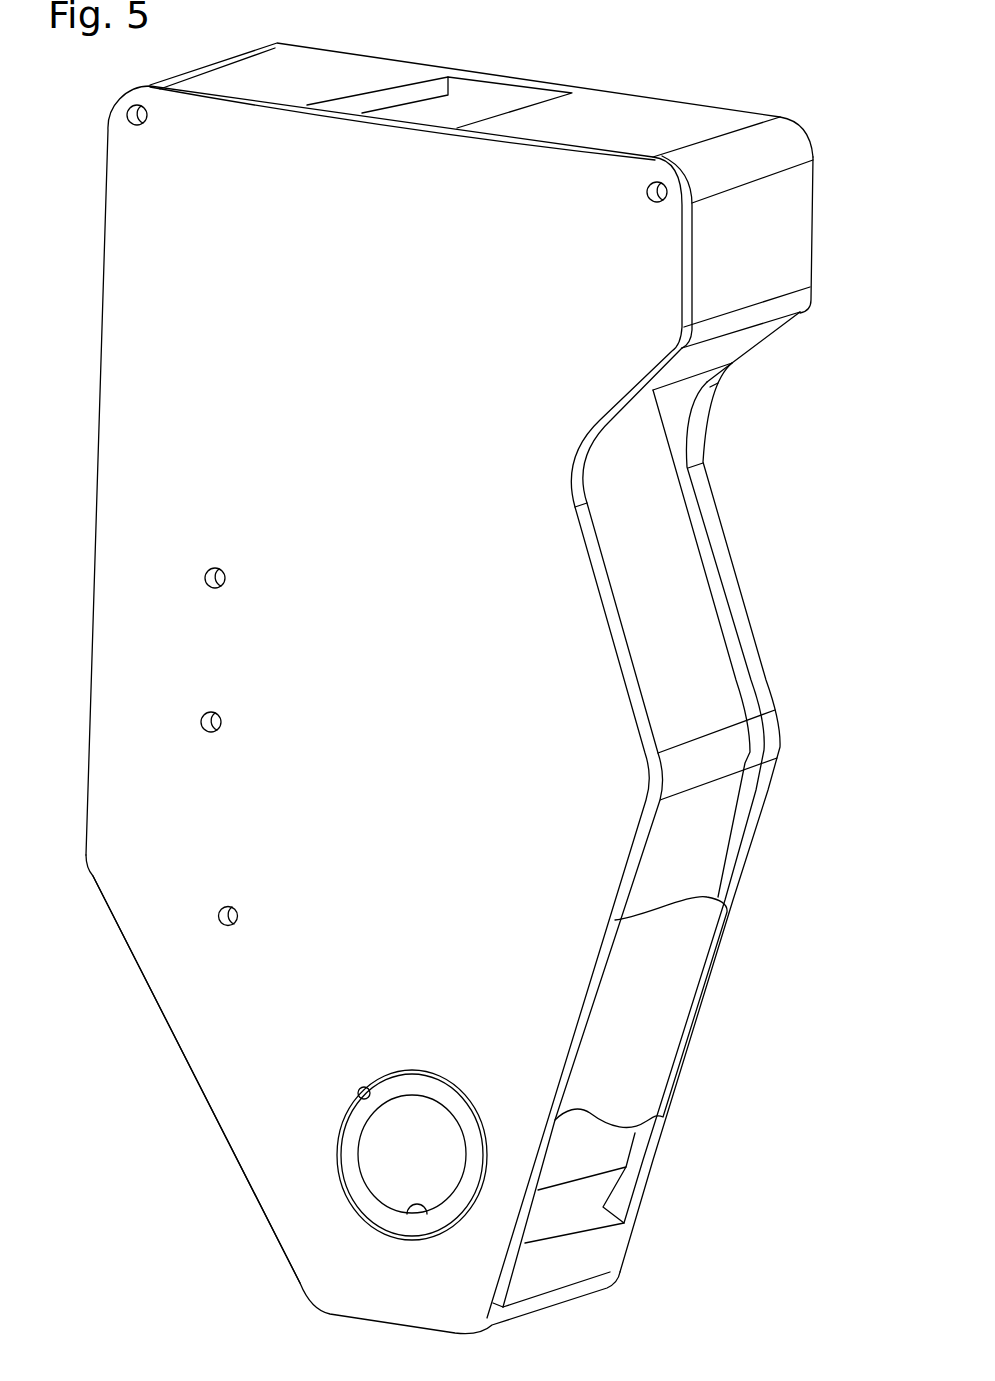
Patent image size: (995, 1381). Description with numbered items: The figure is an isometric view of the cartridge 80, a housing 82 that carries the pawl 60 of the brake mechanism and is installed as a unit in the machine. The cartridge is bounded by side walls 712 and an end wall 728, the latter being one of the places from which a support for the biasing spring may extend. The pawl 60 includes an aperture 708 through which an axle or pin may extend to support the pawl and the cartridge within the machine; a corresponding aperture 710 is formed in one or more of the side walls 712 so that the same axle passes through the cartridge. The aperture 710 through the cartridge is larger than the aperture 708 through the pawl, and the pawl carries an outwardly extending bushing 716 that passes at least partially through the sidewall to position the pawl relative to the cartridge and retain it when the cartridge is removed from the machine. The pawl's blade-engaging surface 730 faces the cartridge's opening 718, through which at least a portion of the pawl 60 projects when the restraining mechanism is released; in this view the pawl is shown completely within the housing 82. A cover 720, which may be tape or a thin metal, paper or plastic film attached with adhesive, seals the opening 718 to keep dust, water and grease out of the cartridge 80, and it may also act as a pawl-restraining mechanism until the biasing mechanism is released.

The cartridge 80 is at (136, 1187).
The housing 82 is at (172, 1064).
The side wall 712 is at (403, 749).
The end wall 728 is at (777, 260).
The opening 718 is at (672, 412).
The blade-engaging surface 730 is at (690, 632).
The pawl 60 is at (684, 550).
The cover 720 is at (658, 1037).
The bushing 716 is at (382, 1212).
The aperture 710 is at (357, 1088).
The aperture 708 is at (427, 1214).